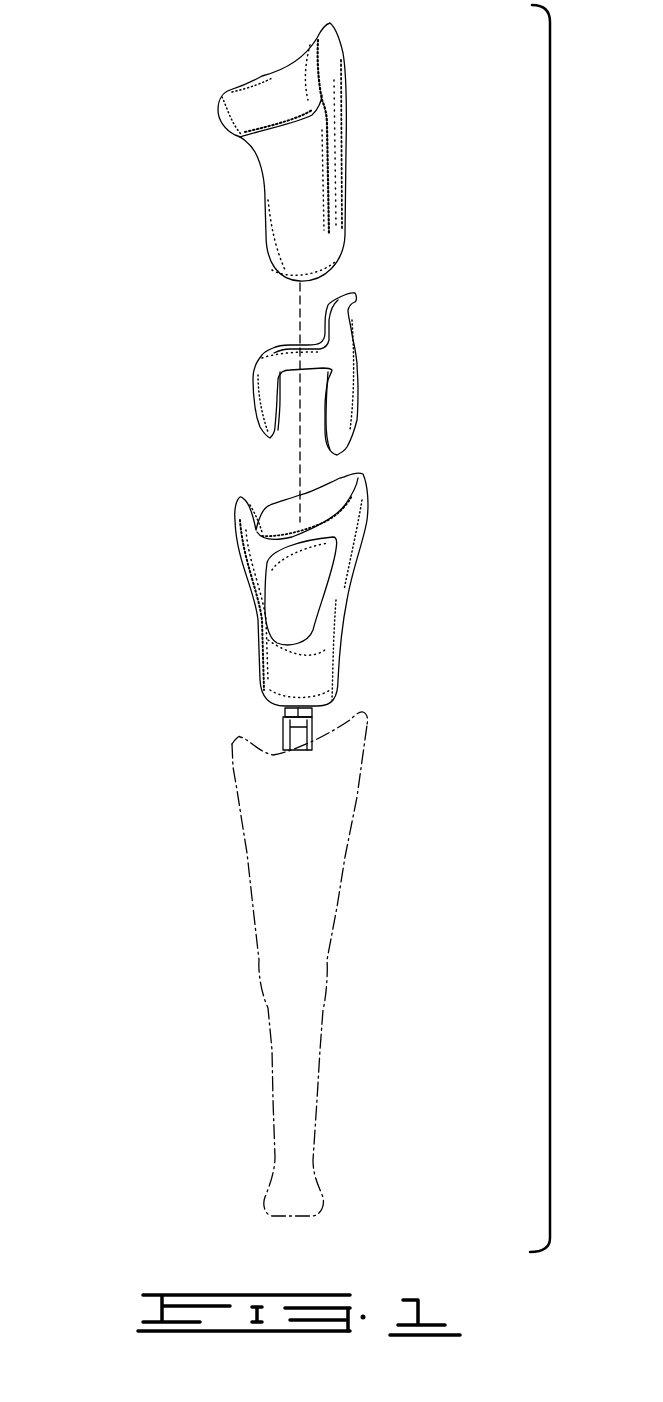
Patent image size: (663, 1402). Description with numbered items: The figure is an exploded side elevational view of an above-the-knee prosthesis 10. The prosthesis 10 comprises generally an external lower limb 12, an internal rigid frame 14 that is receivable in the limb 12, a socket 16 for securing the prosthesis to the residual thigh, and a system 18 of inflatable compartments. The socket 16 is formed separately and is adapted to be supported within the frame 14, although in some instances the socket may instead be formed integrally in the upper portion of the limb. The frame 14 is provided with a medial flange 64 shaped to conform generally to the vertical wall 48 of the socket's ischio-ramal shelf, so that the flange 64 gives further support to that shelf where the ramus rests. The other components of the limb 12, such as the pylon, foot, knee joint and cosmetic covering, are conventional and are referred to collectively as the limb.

The prosthesis 10 is at (177, 302).
The external lower limb 12 is at (243, 823).
The internal rigid frame 14 is at (238, 563).
The socket 16 is at (230, 140).
The system of inflatable compartments 18 is at (254, 366).
The vertical wall 48 is at (225, 93).
The medial flange 64 is at (240, 498).